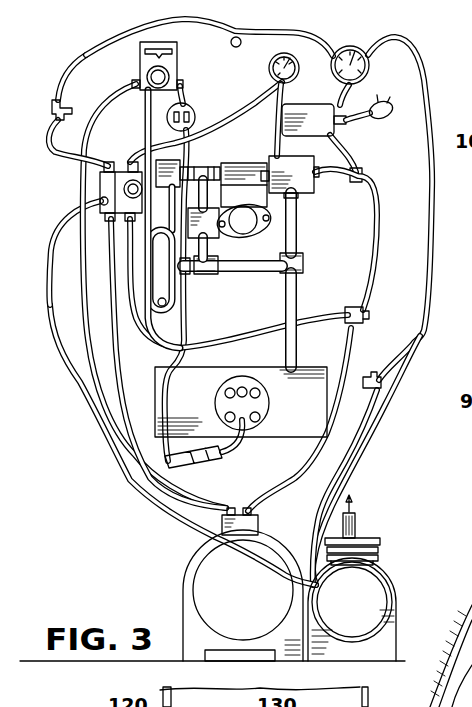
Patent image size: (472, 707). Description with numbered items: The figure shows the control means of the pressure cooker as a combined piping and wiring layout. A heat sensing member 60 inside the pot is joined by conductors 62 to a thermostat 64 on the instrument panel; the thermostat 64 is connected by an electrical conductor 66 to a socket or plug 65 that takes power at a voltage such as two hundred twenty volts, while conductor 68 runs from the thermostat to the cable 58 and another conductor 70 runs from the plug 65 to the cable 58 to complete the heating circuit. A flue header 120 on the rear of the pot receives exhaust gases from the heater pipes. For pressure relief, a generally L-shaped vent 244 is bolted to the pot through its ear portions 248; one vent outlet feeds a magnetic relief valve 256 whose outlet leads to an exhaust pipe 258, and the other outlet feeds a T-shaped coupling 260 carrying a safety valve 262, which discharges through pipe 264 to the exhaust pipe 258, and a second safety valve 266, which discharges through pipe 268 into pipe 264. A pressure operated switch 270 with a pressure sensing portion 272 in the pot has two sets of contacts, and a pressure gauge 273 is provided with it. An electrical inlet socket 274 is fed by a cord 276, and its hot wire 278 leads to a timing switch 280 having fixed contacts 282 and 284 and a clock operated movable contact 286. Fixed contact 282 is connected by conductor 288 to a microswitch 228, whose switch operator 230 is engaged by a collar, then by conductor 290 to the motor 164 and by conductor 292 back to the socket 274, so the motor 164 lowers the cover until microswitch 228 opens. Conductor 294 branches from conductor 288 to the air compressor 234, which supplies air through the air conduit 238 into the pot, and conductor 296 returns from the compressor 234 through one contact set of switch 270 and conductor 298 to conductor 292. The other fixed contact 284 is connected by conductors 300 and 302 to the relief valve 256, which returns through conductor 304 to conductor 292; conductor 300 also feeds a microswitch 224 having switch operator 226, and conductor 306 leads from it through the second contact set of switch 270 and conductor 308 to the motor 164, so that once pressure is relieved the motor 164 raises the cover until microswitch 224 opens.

The cable or conductor 58 is at (233, 450).
The heat sensing member 60 is at (178, 306).
The conductors 62 is at (145, 320).
The thermostat 64 is at (140, 62).
The socket or plug 65 is at (200, 105).
The electrical conductor 66 is at (190, 86).
The conductor 68 is at (124, 86).
The conductor 70 is at (170, 393).
The flue header 120 is at (272, 380).
The motor 164 is at (203, 572).
The microswitch 224 is at (53, 101).
The switch operator 226 is at (65, 70).
The microswitch 228 is at (392, 348).
The switch operator 230 is at (362, 381).
The air compressor 234 is at (375, 593).
The air conduit 238 is at (357, 520).
The vent 244 is at (266, 141).
The ear portions 248 is at (268, 232).
The magnetic relief valve 256 is at (305, 180).
The exhaust pipe 258 is at (297, 218).
The T-shaped coupling 260 is at (204, 150).
The safety or regulator valve 262 is at (195, 226).
The pipe 264 is at (278, 273).
The safety or regulator valve 266 is at (160, 157).
The pipe 268 is at (205, 275).
The pressure operated switch 270 is at (106, 180).
The pressure sensing portion 272 is at (97, 203).
The pressure gauge 273 is at (288, 53).
The electrical inlet socket 274 is at (317, 124).
The cord 276 is at (393, 110).
The hot wire 278 is at (340, 98).
The timing switch 280 is at (376, 46).
The fixed electrical contact 282 is at (392, 37).
The fixed electrical contact 284 is at (347, 43).
The clock operated movable contact 286 is at (366, 77).
The conductor 288 is at (427, 252).
The conductor 290 is at (367, 428).
The conductor 292 is at (377, 264).
The conductor 294 is at (352, 470).
The conductor 296 is at (108, 462).
The conductor 298 is at (355, 307).
The conductor 300 is at (298, 29).
The conductor 302 is at (262, 72).
The conductor 304 is at (360, 168).
The conductor 306 is at (62, 155).
The conductor 308 is at (108, 245).